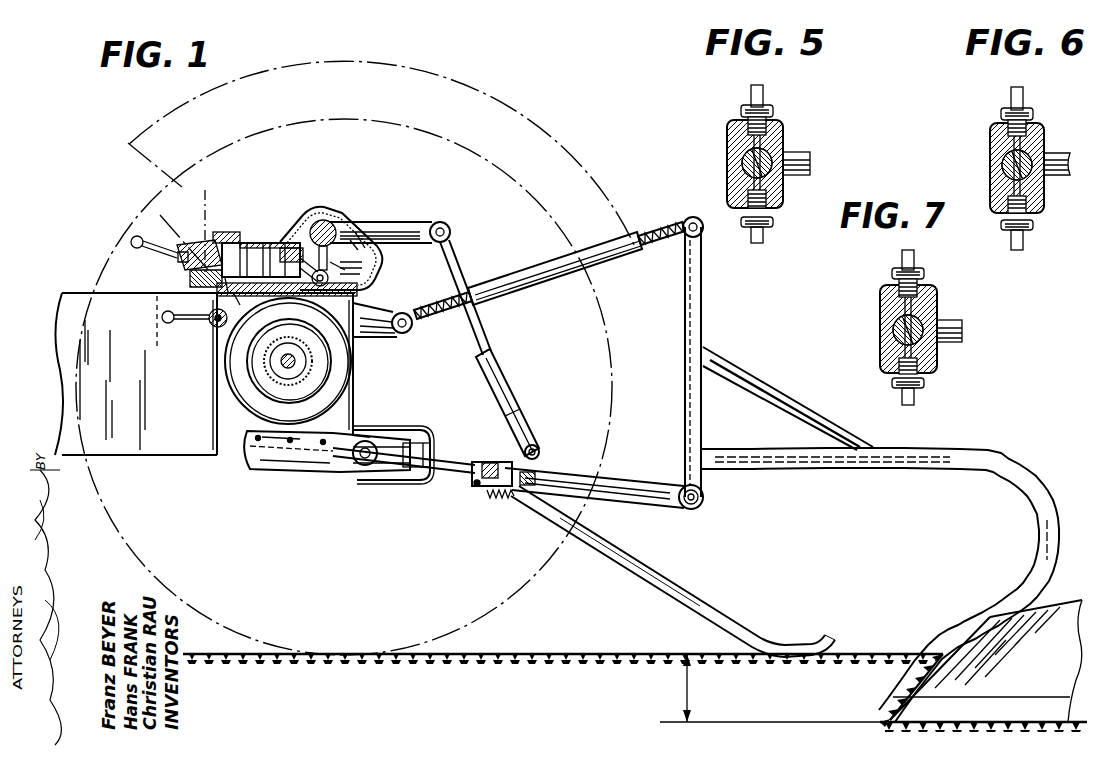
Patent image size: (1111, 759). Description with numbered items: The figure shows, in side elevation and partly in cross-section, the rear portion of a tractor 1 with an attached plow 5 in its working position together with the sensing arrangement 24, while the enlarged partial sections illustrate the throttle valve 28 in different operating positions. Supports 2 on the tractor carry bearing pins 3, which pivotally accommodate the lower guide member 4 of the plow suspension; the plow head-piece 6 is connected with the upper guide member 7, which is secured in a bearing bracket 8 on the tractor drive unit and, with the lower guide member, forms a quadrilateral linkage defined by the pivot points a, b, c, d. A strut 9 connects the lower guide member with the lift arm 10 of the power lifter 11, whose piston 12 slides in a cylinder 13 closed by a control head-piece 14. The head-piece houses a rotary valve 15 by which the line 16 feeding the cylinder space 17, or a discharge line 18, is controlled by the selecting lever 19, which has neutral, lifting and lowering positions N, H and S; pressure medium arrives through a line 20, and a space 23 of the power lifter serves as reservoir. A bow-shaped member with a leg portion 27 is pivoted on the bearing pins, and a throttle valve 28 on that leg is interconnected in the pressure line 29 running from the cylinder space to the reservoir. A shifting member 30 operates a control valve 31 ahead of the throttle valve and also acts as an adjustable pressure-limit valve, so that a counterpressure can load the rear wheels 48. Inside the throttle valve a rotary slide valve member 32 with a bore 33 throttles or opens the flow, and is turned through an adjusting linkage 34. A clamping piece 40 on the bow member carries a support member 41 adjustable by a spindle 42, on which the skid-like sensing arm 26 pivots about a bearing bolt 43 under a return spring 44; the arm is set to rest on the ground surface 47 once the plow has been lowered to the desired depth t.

In FIG. 1, the tractor 1 is at (160, 452).
In FIG. 1, the supports or brackets 2 is at (298, 468).
In FIG. 1, the bearing pins 3 is at (365, 468).
In FIG. 1, the lower guide member 4 is at (627, 480).
In FIG. 1, the plow 5 is at (978, 628).
In FIG. 1, the plow head-piece 6 is at (702, 325).
In FIG. 1, the upper guide member 7 is at (544, 270).
In FIG. 1, the bearing lug or bearing bracket 8 is at (372, 310).
In FIG. 1, the struts 9 is at (498, 365).
In FIG. 1, the lift arm 10 is at (398, 222).
In FIG. 1, the power lifter 11 is at (304, 211).
In FIG. 1, the piston 12 is at (255, 296).
In FIG. 1, the cylinder 13 is at (240, 305).
In FIG. 1, the control head-piece 14 is at (196, 242).
In FIG. 1, the rotary valve 15 is at (190, 280).
In FIG. 1, the line 16 is at (222, 232).
In FIG. 1, the cylinder space 17 is at (248, 243).
In FIG. 1, the discharge line 18 is at (198, 292).
In FIG. 1, the selecting lever 19 is at (137, 249).
In FIG. 1, the line 20 is at (156, 348).
In FIG. 1, the space of the power lifter 23 is at (365, 262).
In FIG. 1, the sensing arrangement 24 is at (460, 478).
In FIG. 1, the skid-like guide member or sensing arm 26 is at (645, 571).
In FIG. 1, the leg portion 27 is at (415, 470).
In FIG. 1, the throttle valve 28 is at (424, 432).
In FIG. 5, the throttle valve 28 is at (728, 135).
In FIG. 6, the throttle valve 28 is at (991, 147).
In FIG. 7, the throttle valve 28 is at (881, 302).
In FIG. 1, the pressure line 29 is at (216, 386).
In FIG. 5, the pressure line 29 is at (750, 243).
In FIG. 6, the pressure line 29 is at (1010, 246).
In FIG. 7, the pressure line 29 is at (900, 400).
In FIG. 1, the shifting member 30 is at (162, 317).
In FIG. 1, the control valve 31 is at (212, 324).
In FIG. 5, the rotary slide valve member 32 is at (740, 166).
In FIG. 6, the rotary slide valve member 32 is at (1000, 172).
In FIG. 7, the rotary slide valve member 32 is at (890, 333).
In FIG. 5, the bore 33 is at (774, 150).
In FIG. 6, the bore 33 is at (1035, 178).
In FIG. 7, the bore 33 is at (925, 340).
In FIG. 5, the adjusting linkage 34 is at (811, 168).
In FIG. 6, the adjusting linkage 34 is at (1062, 153).
In FIG. 7, the adjusting linkage 34 is at (955, 318).
In FIG. 1, the clamping piece 40 is at (476, 490).
In FIG. 1, the support member 41 is at (540, 452).
In FIG. 1, the spindle 42 is at (496, 440).
In FIG. 1, the bearing bolt 43 is at (537, 484).
In FIG. 1, the return spring 44 is at (500, 502).
In FIG. 1, the surface 47 is at (880, 654).
In FIG. 1, the rear wheels 48 is at (552, 560).
In FIG. 1, the pivot point a is at (408, 332).
In FIG. 1, the pivot point b is at (692, 217).
In FIG. 1, the pivot point c is at (368, 440).
In FIG. 1, the pivot point d is at (703, 504).
In FIG. 1, the lifting position H is at (132, 243).
In FIG. 1, the neutral position N is at (152, 209).
In FIG. 1, the lowering position S is at (206, 226).
In FIG. 1, the depth t is at (693, 690).